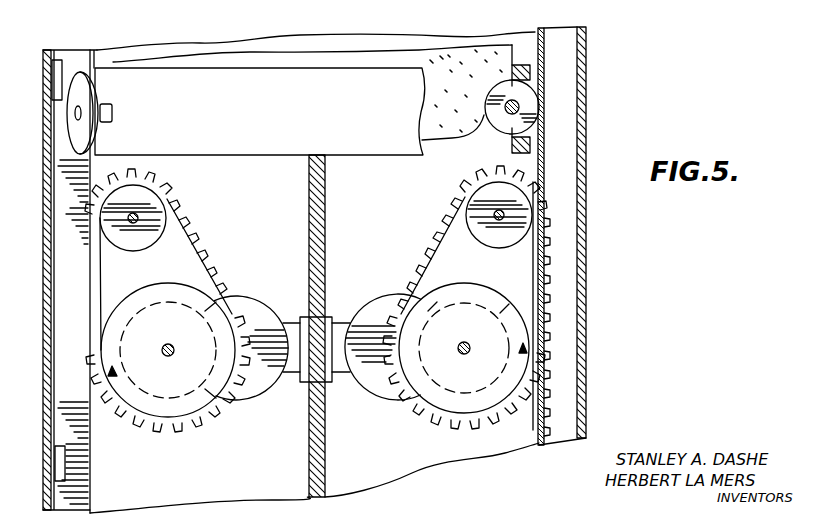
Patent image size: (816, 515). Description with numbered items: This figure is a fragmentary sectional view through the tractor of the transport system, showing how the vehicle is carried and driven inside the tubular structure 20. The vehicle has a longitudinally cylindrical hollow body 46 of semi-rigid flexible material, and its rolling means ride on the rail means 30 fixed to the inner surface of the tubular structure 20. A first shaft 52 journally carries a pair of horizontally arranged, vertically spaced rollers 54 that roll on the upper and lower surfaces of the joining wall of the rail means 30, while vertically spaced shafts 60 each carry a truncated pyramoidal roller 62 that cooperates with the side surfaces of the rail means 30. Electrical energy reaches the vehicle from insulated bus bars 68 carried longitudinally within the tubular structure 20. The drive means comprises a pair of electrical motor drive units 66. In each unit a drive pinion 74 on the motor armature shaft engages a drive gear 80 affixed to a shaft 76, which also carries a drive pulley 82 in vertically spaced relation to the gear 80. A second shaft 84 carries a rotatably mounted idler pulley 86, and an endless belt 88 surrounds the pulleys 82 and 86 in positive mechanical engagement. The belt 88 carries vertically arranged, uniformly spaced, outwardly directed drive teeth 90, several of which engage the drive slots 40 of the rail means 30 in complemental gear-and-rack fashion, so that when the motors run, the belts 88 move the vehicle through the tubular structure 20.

The tubular structure 20 is at (587, 328).
The rail means 30 is at (92, 488).
The drive slots 40 is at (544, 133).
The hollow body 46 is at (485, 53).
The first shaft 52 is at (505, 105).
The rollers 54 is at (525, 100).
The shafts 60 is at (113, 115).
The truncated pyramoidal roller 62 is at (95, 92).
The electrical motor drive unit 66 is at (263, 397).
The electrical bus bars 68 is at (315, 3).
The drive pinion 74 is at (233, 310).
The shaft 76 is at (172, 327).
The drive gear 80 is at (173, 393).
The drive pulley 82 is at (200, 401).
The second shaft 84 is at (135, 225).
The idler pulley 86 is at (150, 202).
The endless belt 88 is at (218, 267).
The drive teeth 90 is at (208, 244).